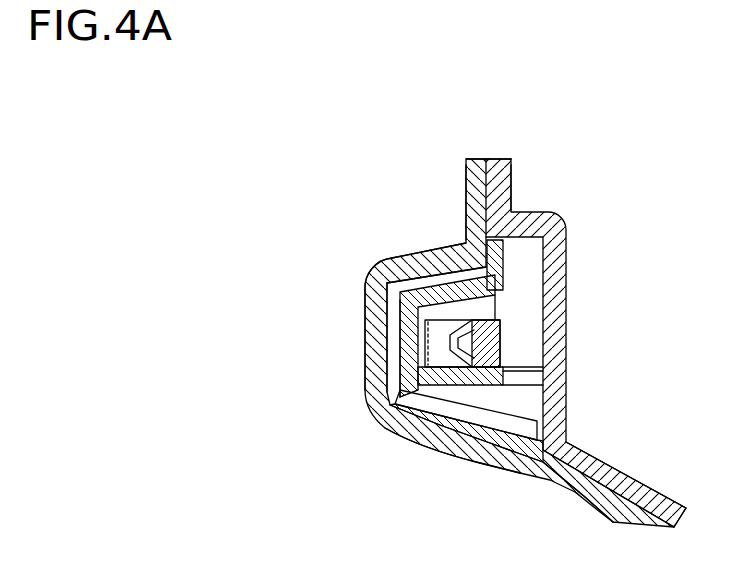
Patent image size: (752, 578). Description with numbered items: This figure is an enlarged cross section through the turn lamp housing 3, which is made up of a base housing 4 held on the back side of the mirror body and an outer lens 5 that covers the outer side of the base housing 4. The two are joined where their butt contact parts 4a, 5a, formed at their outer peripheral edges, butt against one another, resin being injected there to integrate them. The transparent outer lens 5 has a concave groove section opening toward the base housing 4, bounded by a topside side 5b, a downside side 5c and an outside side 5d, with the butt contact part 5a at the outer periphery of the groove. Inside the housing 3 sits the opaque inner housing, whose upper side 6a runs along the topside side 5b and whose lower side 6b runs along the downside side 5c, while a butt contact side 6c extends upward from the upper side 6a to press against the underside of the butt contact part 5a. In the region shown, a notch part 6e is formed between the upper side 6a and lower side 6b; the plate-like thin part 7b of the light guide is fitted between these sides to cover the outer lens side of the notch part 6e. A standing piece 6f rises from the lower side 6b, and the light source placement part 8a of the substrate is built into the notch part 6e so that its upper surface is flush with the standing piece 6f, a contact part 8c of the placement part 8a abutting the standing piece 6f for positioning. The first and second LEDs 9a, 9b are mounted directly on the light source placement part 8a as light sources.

The housing 3 is at (486, 156).
The base housing 4 is at (567, 367).
The butt contact part 4a is at (511, 172).
The outer lens 5 is at (365, 298).
The butt contact part 5a is at (475, 183).
The topside side 5b is at (445, 265).
The downside side 5c is at (425, 433).
The outside side 5d is at (378, 357).
The upper side 6a is at (413, 280).
The lower side 6b is at (448, 410).
The butt contact side 6c is at (497, 265).
The notch part 6e is at (383, 272).
The standing piece 6f is at (395, 380).
The thin part 7b is at (407, 327).
The light source placement part 8a is at (498, 395).
The contact part 8c is at (403, 373).
The first LED 9a is at (500, 320).
The second LED 9b is at (437, 338).